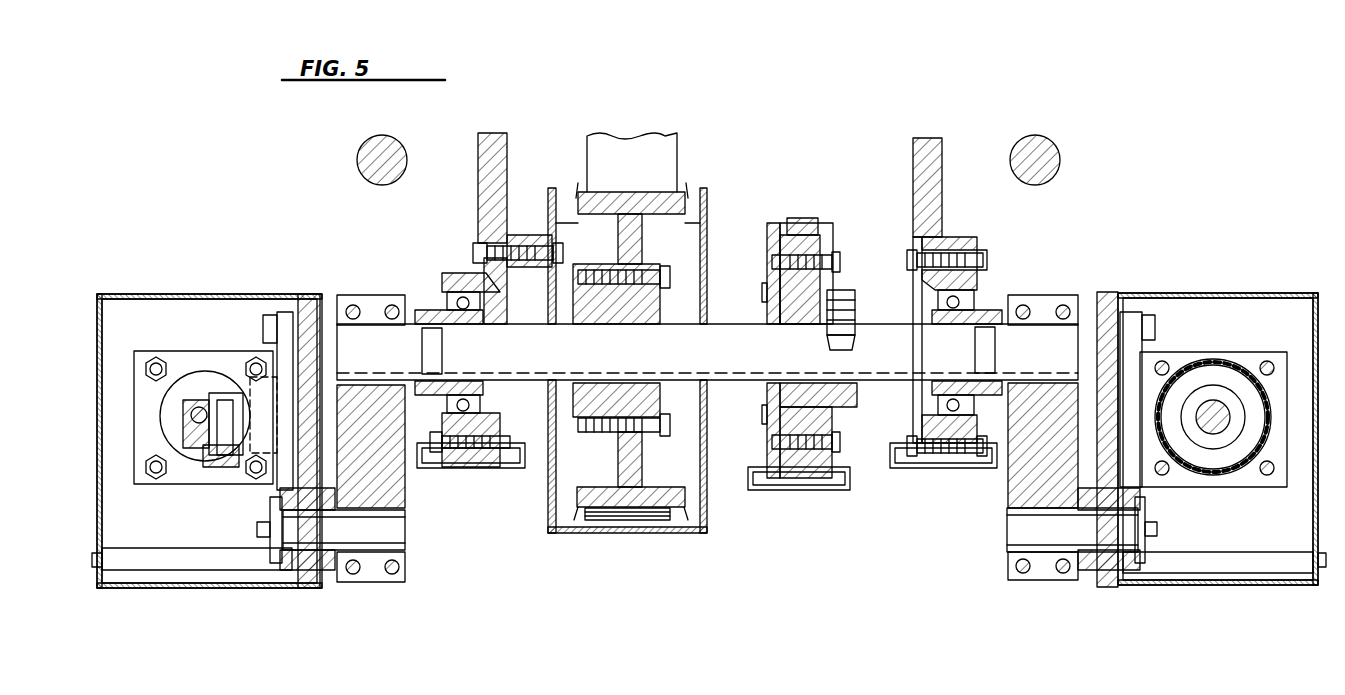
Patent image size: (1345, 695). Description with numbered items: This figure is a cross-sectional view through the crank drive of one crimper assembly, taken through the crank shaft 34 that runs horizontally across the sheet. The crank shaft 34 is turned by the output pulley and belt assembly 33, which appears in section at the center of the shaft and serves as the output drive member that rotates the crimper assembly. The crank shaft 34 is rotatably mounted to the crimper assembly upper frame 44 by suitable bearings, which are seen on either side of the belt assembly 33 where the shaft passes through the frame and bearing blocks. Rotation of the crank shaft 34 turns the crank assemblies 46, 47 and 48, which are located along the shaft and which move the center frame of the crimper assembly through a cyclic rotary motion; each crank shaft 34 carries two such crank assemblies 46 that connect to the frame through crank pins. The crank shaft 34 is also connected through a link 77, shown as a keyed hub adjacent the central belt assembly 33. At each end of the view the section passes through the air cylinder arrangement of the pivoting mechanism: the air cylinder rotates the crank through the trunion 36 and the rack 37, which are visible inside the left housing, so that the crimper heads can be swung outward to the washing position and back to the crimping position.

The output pulley and belt assembly 33 is at (665, 143).
The crank shaft 34 is at (723, 335).
The trunion 36 is at (192, 445).
The rack 37 is at (213, 455).
The upper frame 44 is at (1113, 303).
The crank assembly 46 is at (392, 502).
The crank assembly 47 is at (805, 425).
The crank assembly 48 is at (1045, 570).
The link 77 is at (808, 232).